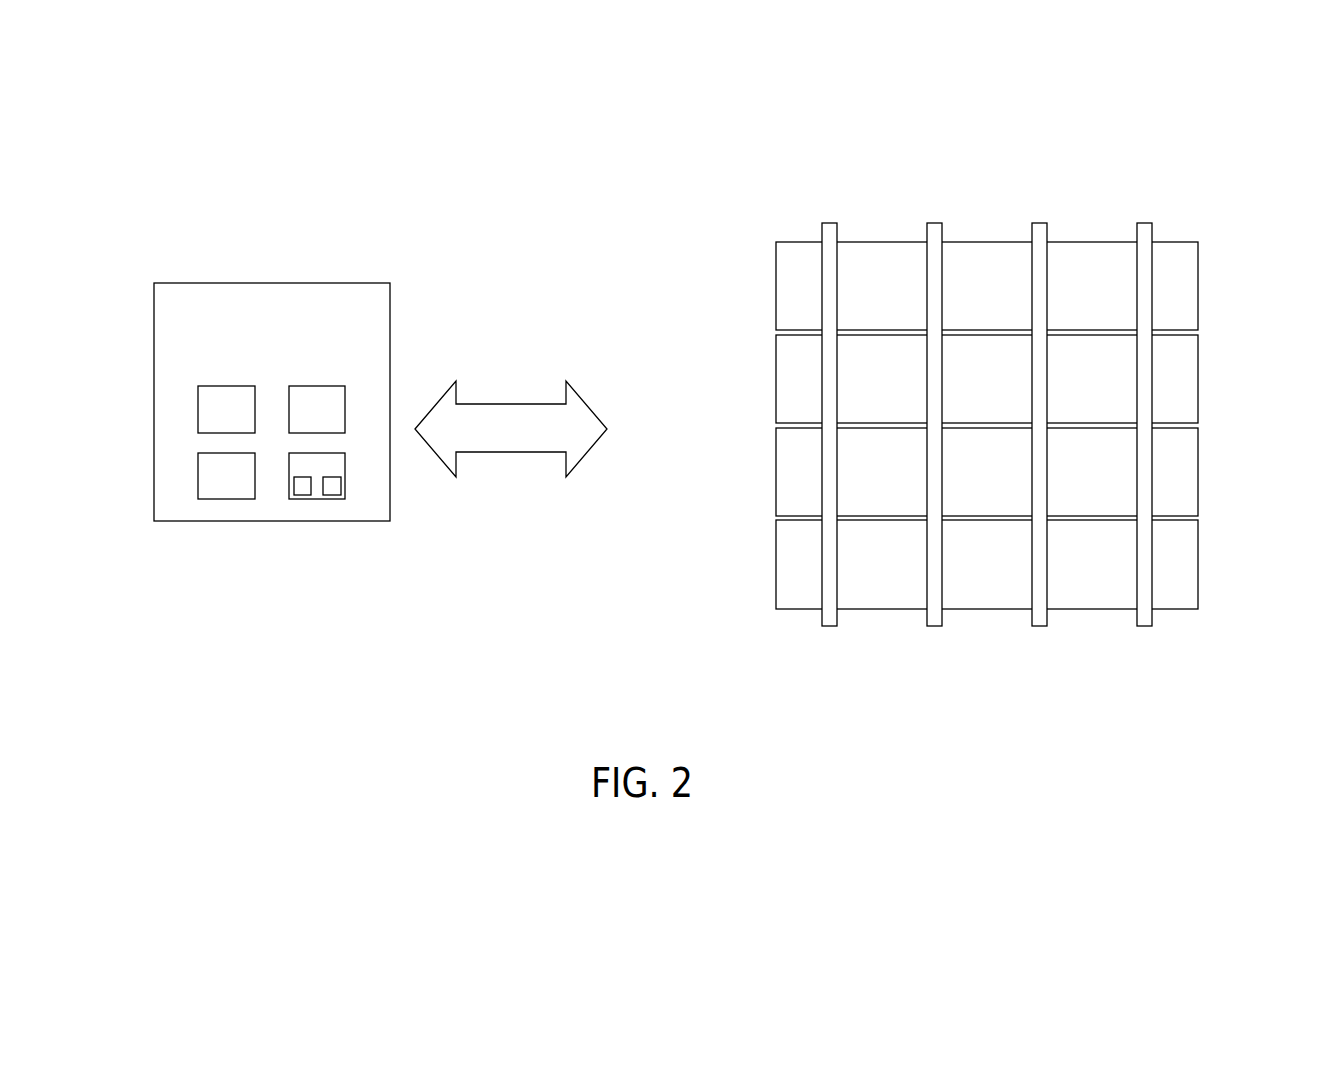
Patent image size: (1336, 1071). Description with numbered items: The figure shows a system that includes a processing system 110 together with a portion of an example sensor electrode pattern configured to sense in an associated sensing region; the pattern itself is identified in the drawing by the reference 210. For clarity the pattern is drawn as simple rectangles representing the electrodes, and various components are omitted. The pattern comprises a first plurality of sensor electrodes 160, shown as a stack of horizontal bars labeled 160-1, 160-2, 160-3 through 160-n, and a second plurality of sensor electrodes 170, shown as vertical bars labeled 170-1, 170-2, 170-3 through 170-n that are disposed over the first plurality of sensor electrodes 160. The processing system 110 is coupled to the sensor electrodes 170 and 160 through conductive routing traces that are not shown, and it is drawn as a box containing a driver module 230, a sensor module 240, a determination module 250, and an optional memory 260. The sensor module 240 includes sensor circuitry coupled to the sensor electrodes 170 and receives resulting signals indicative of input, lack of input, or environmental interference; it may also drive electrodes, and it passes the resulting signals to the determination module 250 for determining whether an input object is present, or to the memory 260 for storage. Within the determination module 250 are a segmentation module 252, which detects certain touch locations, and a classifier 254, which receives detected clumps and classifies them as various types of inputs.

The processing system 110 is at (253, 377).
The input device / sensor arrangement 210 is at (990, 367).
The driver module 230 is at (198, 412).
The sensor module 240 is at (227, 499).
The determination module 250 is at (317, 499).
The segmentation module 252 is at (301, 495).
The classifier 254 is at (333, 495).
The memory 260 is at (345, 423).
The first plurality of sensor electrodes 160 is at (990, 425).
The sensor electrode 160-1 is at (1178, 281).
The sensor electrode 160-2 is at (1178, 366).
The sensor electrode 160-3 is at (1178, 462).
The sensor electrode 160-n is at (1178, 552).
The second plurality of sensor electrodes 170 is at (987, 415).
The sensor electrode 170-1 is at (830, 630).
The sensor electrode 170-2 is at (935, 630).
The sensor electrode 170-3 is at (1040, 630).
The sensor electrode 170-n is at (1145, 630).